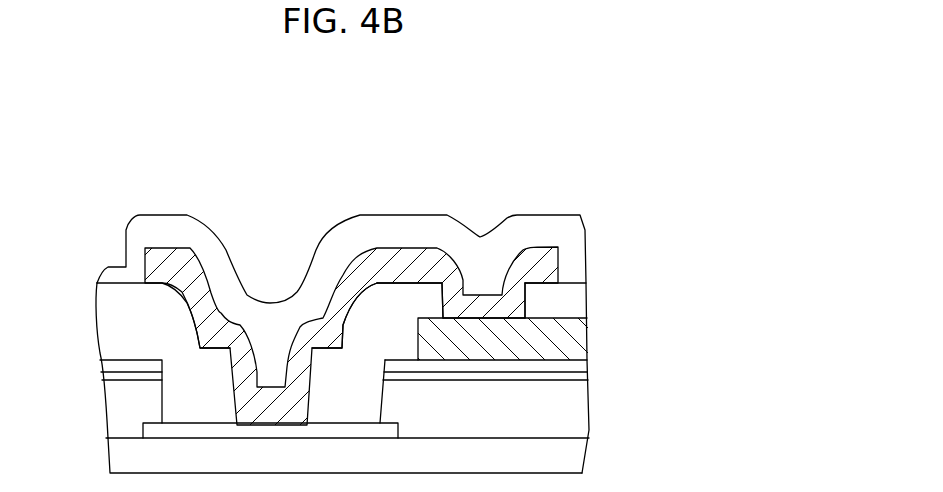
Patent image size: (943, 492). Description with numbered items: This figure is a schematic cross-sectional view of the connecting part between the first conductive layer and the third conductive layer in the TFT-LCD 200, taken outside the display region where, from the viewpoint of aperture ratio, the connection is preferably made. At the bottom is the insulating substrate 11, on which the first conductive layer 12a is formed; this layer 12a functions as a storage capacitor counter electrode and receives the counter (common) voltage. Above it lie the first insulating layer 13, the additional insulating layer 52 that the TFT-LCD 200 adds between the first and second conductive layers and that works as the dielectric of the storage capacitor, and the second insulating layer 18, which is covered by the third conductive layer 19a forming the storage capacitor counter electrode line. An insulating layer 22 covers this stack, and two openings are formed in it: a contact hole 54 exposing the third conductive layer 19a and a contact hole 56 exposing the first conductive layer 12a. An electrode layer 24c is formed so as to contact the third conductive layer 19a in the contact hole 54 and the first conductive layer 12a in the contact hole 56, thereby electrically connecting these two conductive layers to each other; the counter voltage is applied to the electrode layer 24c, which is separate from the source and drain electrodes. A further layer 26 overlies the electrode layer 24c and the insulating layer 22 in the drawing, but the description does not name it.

The TFT-LCD 200 is at (563, 180).
The passivation layer 26 is at (585, 247).
The insulating layer 22 is at (110, 300).
The electrode layer 24c is at (388, 257).
The contact hole 56 is at (273, 327).
The contact hole 54 is at (483, 268).
The third conductive layer 19a is at (580, 337).
The second insulating layer 18 is at (572, 367).
The insulating layer 52 is at (573, 375).
The first insulating layer 13 is at (573, 400).
The first conductive layer 12a is at (157, 432).
The insulating substrate 11 is at (578, 458).